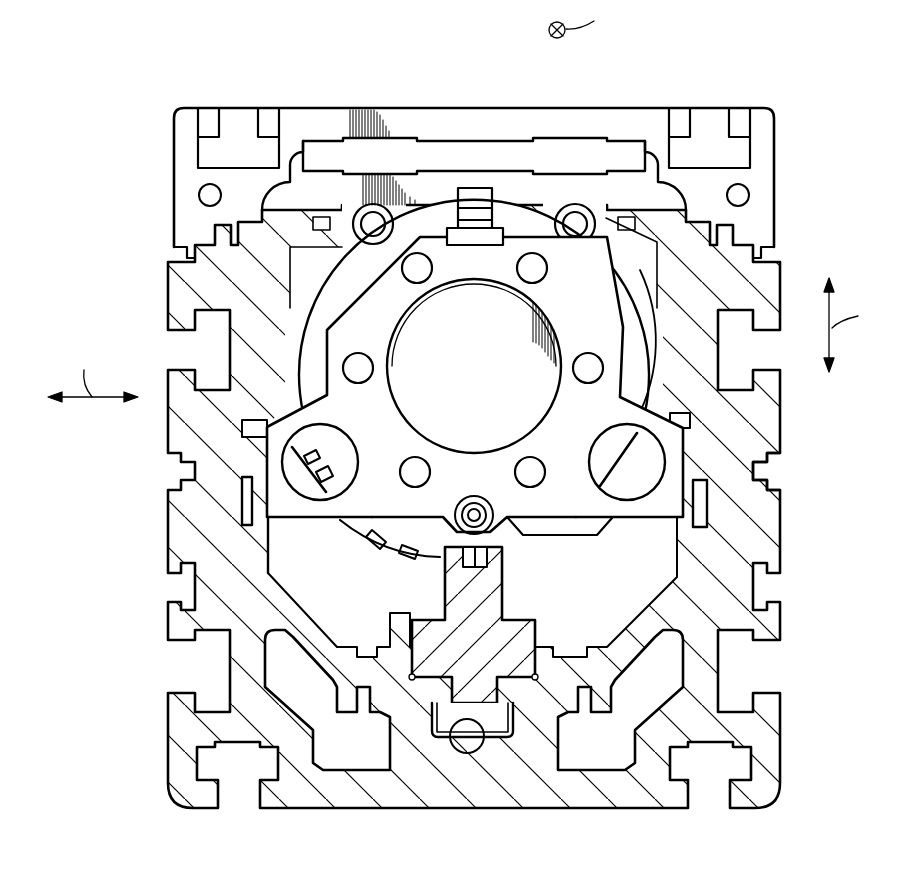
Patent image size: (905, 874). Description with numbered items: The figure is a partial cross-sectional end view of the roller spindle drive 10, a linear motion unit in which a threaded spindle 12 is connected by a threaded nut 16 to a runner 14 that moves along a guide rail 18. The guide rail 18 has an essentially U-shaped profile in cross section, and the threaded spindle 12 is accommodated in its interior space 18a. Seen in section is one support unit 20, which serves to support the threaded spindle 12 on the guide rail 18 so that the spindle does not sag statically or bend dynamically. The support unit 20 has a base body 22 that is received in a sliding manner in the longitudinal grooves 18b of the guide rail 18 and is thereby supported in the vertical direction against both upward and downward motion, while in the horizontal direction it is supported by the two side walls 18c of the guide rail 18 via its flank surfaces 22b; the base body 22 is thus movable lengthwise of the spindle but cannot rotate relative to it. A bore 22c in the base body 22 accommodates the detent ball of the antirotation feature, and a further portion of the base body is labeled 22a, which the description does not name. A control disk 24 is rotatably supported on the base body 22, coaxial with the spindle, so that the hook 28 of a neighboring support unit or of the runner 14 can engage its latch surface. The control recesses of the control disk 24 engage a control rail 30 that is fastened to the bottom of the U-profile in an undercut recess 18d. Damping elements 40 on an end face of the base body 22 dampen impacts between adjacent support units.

The roller spindle drive 10 is at (690, 66).
The threaded spindle 12 is at (530, 405).
The runner 14 is at (305, 115).
The threaded nut 16 is at (300, 305).
The guide rail 18 is at (180, 296).
The interior space 18a is at (290, 573).
The longitudinal grooves 18b is at (735, 492).
The side walls 18c is at (268, 548).
The recess 18d is at (470, 750).
The support unit 20 is at (643, 369).
The base body 22 is at (350, 338).
The bracket tab 22a is at (693, 525).
The flank surfaces 22b is at (267, 457).
The bore 22c is at (474, 512).
The control disk 24 is at (540, 230).
The hook 28 is at (470, 200).
The control rail 30 is at (520, 614).
The damping elements 40 is at (410, 474).